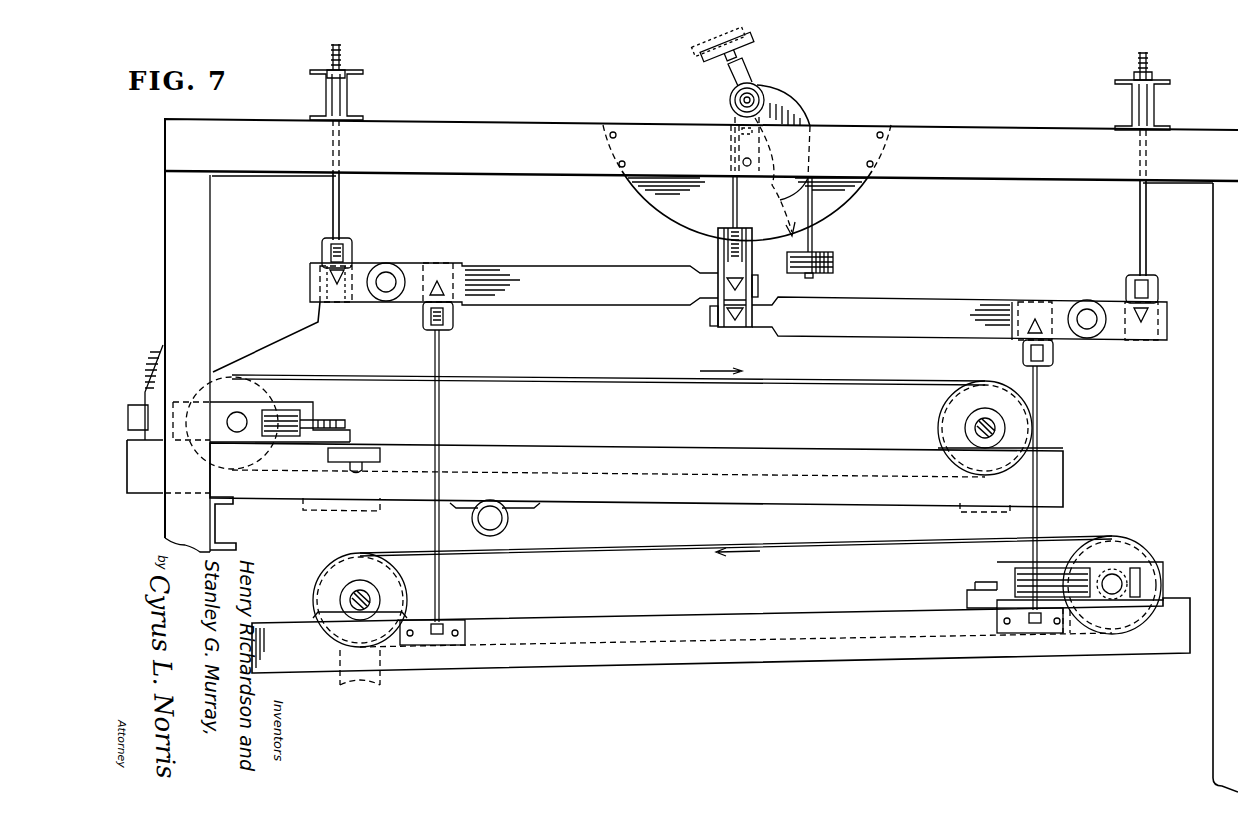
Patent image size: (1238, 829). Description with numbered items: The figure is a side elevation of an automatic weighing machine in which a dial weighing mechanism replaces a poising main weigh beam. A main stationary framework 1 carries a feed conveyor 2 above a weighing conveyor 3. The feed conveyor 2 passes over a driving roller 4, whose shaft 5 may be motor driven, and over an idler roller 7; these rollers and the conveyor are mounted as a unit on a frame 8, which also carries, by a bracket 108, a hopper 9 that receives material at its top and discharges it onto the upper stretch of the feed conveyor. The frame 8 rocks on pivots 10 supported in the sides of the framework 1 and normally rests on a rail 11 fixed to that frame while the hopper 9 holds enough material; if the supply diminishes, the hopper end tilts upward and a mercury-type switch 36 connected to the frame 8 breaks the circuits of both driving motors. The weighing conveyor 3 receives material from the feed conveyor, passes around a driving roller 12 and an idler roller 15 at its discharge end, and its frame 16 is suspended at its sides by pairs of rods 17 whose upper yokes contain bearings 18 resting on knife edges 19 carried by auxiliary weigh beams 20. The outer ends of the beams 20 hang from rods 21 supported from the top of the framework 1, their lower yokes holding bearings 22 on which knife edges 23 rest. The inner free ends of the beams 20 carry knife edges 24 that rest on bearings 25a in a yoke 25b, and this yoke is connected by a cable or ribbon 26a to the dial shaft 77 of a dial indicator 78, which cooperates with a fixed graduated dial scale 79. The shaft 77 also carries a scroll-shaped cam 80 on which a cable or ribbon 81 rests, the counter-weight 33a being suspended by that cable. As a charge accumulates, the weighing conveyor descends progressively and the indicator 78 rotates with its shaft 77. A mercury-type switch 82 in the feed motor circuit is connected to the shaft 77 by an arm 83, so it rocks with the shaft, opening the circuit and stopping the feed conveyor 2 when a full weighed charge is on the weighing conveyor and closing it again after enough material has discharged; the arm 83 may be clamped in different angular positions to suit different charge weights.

The framework 1 is at (175, 251).
The bracket 108 is at (150, 385).
The feed conveyor 2 is at (597, 376).
The weighing conveyor 3 is at (668, 549).
The driving roller 4 is at (940, 418).
The shaft 5 is at (975, 428).
The idler roller 7 is at (262, 393).
The frame 8 is at (612, 486).
The hopper 9 is at (305, 335).
The pivots 10 is at (508, 518).
The rail 11 is at (218, 525).
The driving roller 12 is at (1135, 548).
The idler roller 15 is at (392, 580).
The frame 16 is at (839, 650).
The rods 17 is at (440, 420).
The bearings 18 is at (440, 262).
The knife edges 19 is at (432, 298).
The auxiliary weigh beams 20 is at (556, 275).
The rods 21 is at (341, 218).
The bearings 22 is at (340, 306).
The knife edges 23 is at (352, 258).
The knife edges 24 is at (712, 300).
The bearings 25a is at (740, 292).
The yoke 25b is at (718, 250).
The cable or ribbon 26a is at (732, 195).
The counter-weight 33a is at (835, 262).
The switch 36 is at (372, 450).
The dial shaft 77 is at (762, 88).
The dial indicator 78 is at (775, 212).
The dial scale 79 is at (650, 202).
The scroll-shaped cam 80 is at (808, 105).
The cable or ribbon 81 is at (813, 245).
The switch 82 is at (740, 38).
The arm 83 is at (745, 70).